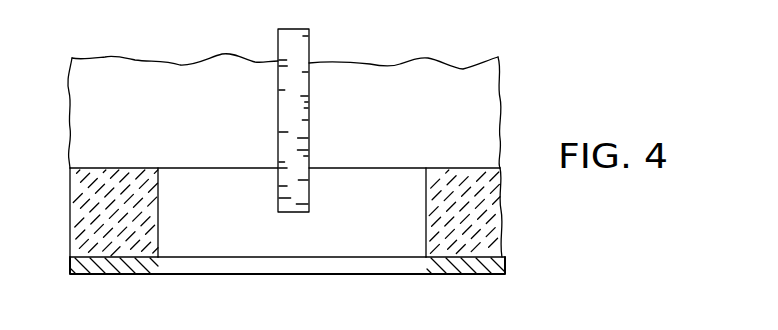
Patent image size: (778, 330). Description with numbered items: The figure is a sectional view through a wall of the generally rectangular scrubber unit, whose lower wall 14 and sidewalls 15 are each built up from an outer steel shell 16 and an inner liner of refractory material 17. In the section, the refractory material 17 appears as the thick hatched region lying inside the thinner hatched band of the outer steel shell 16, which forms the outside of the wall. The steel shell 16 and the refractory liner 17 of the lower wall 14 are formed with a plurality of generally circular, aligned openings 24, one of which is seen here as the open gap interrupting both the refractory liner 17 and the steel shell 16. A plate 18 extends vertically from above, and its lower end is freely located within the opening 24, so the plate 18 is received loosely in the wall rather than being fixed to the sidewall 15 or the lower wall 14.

The lower wall 14 is at (483, 276).
The sidewall 15 is at (494, 88).
The outer steel shell 16 is at (505, 262).
The refractory material 17 is at (490, 203).
The plate 18 is at (285, 97).
The opening 24 is at (416, 176).